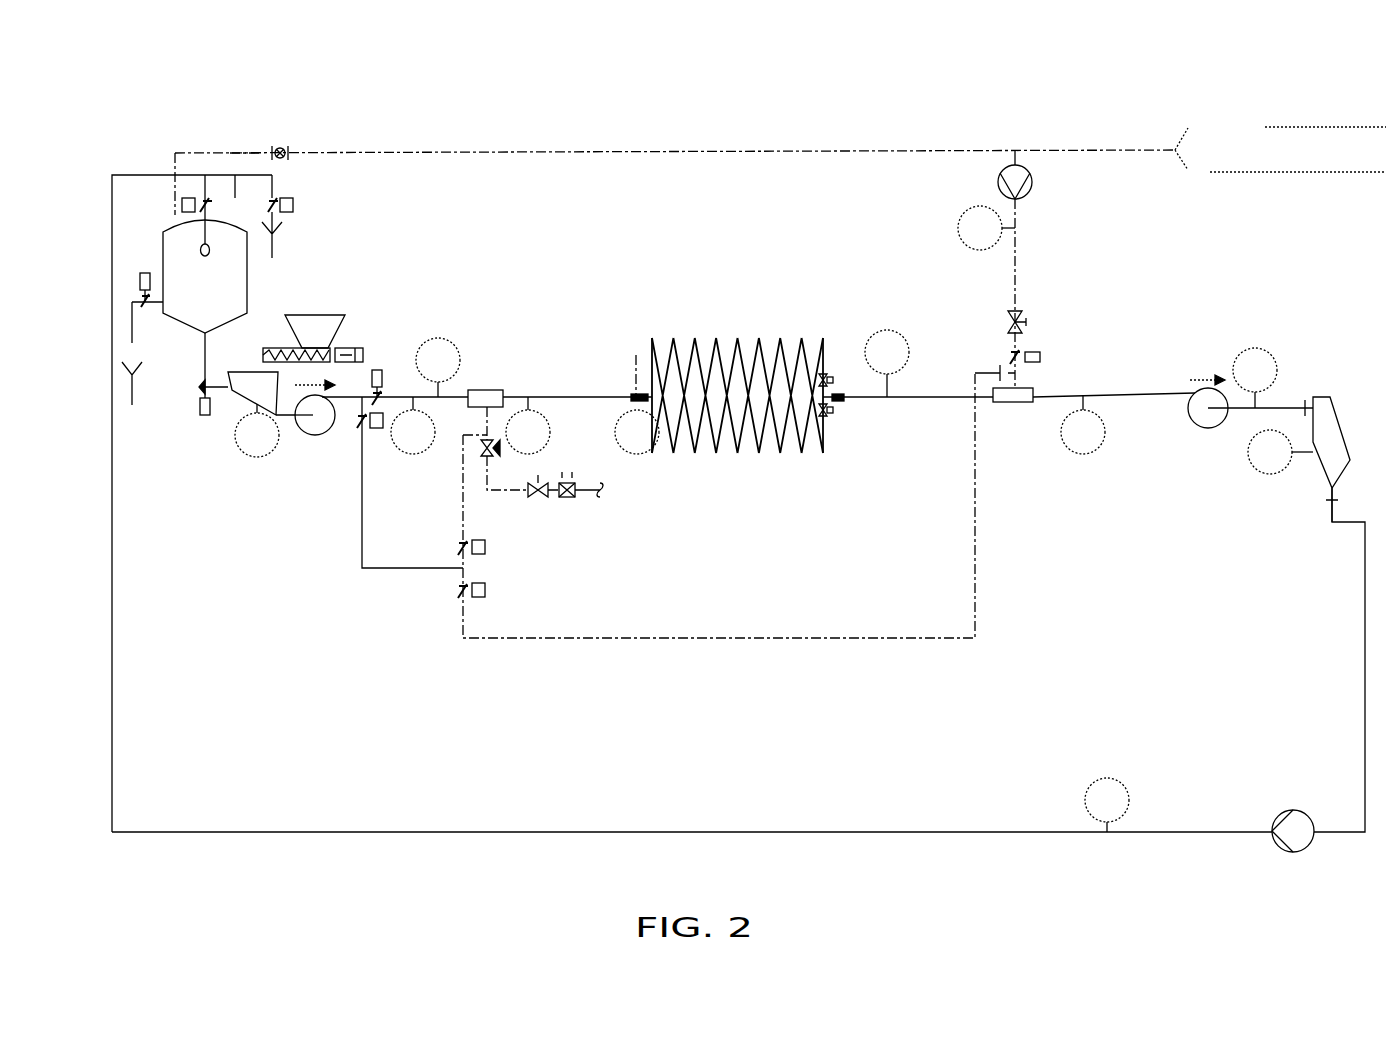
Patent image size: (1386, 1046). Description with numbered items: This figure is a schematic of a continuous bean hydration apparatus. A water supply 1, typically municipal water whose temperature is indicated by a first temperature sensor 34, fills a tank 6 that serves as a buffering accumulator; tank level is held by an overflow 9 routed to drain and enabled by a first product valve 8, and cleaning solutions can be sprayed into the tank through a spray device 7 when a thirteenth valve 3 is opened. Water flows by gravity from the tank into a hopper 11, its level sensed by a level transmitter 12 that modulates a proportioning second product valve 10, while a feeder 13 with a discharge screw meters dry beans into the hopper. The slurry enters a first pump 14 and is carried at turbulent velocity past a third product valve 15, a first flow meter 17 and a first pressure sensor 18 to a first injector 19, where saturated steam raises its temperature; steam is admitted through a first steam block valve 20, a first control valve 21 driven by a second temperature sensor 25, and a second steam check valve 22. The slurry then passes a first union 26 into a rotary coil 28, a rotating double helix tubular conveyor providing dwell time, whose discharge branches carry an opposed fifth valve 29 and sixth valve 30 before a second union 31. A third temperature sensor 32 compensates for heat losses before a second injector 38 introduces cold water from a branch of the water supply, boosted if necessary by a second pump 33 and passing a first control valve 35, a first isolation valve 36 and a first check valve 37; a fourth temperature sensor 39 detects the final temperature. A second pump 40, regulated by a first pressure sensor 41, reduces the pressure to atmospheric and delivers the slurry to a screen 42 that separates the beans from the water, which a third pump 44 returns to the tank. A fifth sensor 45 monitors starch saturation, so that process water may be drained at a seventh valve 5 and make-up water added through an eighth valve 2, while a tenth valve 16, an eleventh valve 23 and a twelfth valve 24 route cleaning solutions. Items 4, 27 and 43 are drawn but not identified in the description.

The water supply 1 is at (1140, 148).
The eighth valve 2 is at (277, 146).
The thirteenth valve 3 is at (188, 198).
The supply line branch 4 is at (250, 160).
The seventh valve 5 is at (294, 199).
The tank 6 is at (249, 284).
The spray device 7 is at (200, 248).
The first product valve 8 is at (139, 274).
The overflow 9 is at (137, 349).
The second product valve 10 is at (199, 406).
The hopper 11 is at (236, 412).
The level transmitter 12 is at (245, 455).
The feeder 13 is at (322, 314).
The first pump 14 is at (306, 444).
The third product valve 15 is at (377, 369).
The tenth valve 16 is at (357, 431).
The first flow meter 17 is at (414, 397).
The first pressure sensor 18 is at (441, 356).
The first injector 19 is at (487, 390).
The first steam block valve 20 is at (592, 494).
The first control valve 21 is at (565, 497).
The second steam check valve 22 is at (492, 437).
The eleventh valve 23 is at (486, 546).
The twelfth valve 24 is at (486, 591).
The second temperature sensor 25 is at (544, 414).
The first union 26 is at (636, 355).
The heat exchanger 27 is at (660, 454).
The rotary coil 28 is at (740, 454).
The fifth valve 29 is at (826, 372).
The sixth valve 30 is at (840, 392).
The second union 31 is at (848, 403).
The third temperature sensor 32 is at (909, 352).
The second pump 33 is at (997, 182).
The first temperature sensor 34 is at (958, 230).
The first control valve 35 is at (1021, 318).
The first isolation valve 36 is at (1040, 354).
The first check valve 37 is at (1000, 369).
The second injector 38 is at (1013, 403).
The fourth temperature sensor 39 is at (1083, 455).
The second pump 40 is at (1200, 390).
The first pressure sensor 41 is at (1251, 350).
The screen 42 is at (1322, 395).
The level transmitter 43 is at (1258, 468).
The third pump 44 is at (1293, 809).
The fifth sensor 45 is at (1125, 790).